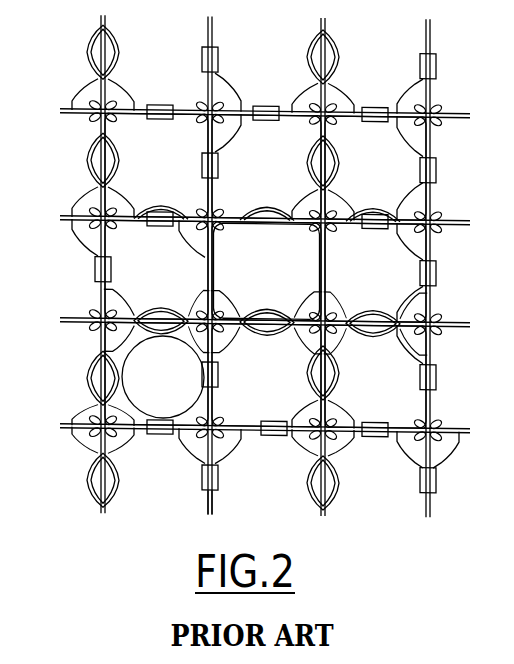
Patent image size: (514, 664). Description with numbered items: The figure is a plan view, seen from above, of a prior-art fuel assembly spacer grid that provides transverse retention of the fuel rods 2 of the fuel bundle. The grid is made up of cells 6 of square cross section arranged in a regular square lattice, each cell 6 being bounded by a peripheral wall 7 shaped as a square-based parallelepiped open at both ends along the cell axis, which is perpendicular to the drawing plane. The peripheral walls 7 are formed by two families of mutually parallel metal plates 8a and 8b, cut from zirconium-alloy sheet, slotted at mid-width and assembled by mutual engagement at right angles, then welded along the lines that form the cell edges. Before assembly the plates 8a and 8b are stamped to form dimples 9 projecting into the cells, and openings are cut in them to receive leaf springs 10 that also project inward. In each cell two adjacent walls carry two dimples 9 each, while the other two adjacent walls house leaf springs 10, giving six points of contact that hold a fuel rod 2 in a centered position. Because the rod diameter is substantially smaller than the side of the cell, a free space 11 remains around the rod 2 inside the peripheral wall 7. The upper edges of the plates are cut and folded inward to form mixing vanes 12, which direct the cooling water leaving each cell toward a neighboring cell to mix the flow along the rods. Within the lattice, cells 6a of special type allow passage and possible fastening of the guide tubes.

The fuel rod 2 is at (123, 395).
The cell 6 is at (319, 325).
The cell of special type 6a is at (266, 271).
The peripheral wall 7 is at (128, 218).
The plate 8a is at (72, 436).
The plate 8b is at (213, 505).
The dimple 9 is at (86, 159).
The leaf spring 10 is at (262, 104).
The free space 11 is at (118, 407).
The mixing vane 12 is at (198, 446).